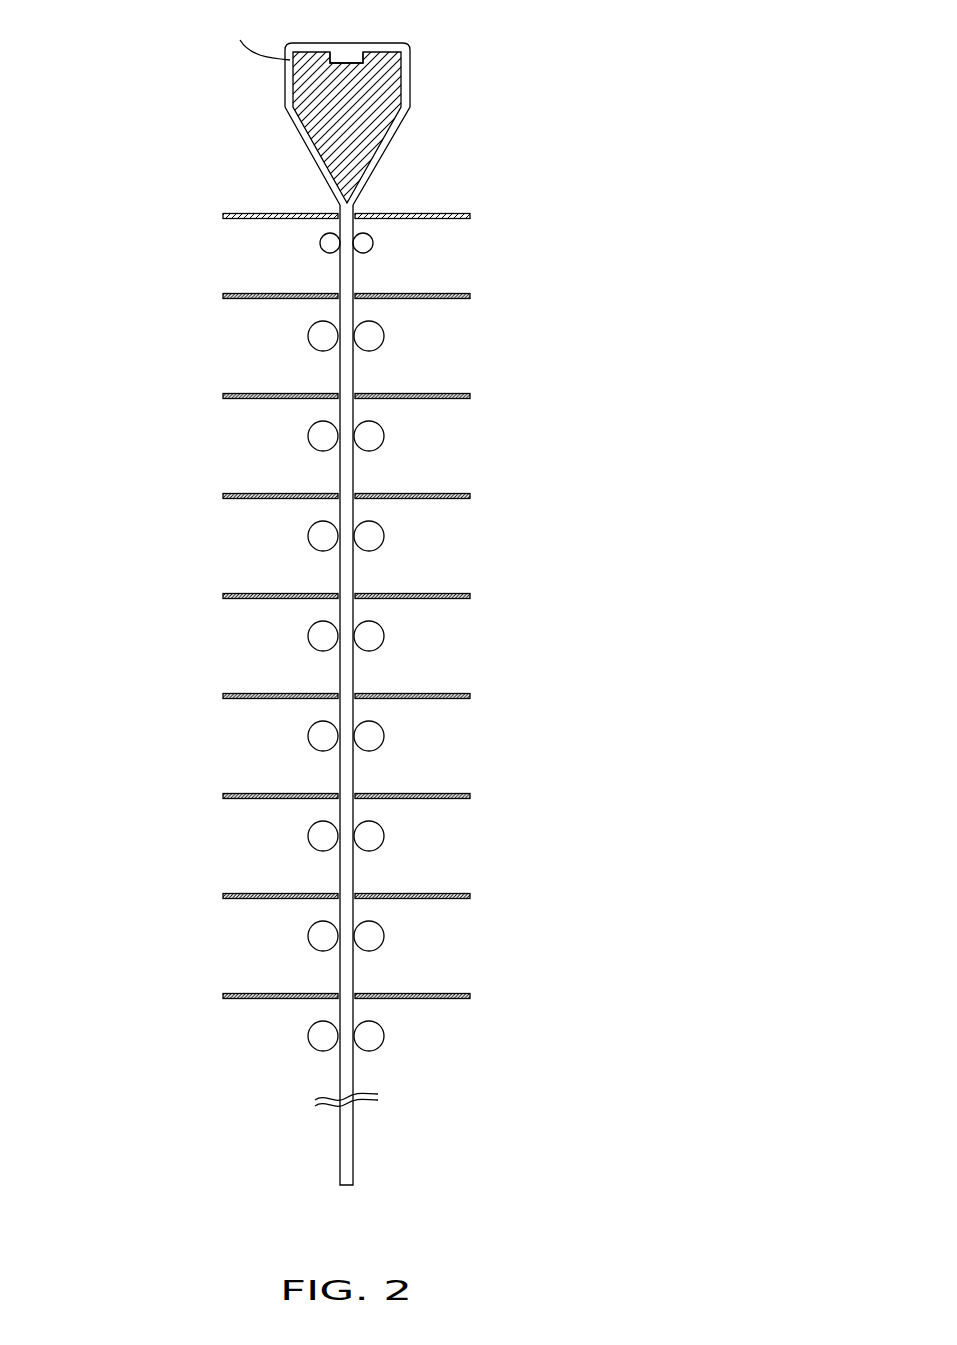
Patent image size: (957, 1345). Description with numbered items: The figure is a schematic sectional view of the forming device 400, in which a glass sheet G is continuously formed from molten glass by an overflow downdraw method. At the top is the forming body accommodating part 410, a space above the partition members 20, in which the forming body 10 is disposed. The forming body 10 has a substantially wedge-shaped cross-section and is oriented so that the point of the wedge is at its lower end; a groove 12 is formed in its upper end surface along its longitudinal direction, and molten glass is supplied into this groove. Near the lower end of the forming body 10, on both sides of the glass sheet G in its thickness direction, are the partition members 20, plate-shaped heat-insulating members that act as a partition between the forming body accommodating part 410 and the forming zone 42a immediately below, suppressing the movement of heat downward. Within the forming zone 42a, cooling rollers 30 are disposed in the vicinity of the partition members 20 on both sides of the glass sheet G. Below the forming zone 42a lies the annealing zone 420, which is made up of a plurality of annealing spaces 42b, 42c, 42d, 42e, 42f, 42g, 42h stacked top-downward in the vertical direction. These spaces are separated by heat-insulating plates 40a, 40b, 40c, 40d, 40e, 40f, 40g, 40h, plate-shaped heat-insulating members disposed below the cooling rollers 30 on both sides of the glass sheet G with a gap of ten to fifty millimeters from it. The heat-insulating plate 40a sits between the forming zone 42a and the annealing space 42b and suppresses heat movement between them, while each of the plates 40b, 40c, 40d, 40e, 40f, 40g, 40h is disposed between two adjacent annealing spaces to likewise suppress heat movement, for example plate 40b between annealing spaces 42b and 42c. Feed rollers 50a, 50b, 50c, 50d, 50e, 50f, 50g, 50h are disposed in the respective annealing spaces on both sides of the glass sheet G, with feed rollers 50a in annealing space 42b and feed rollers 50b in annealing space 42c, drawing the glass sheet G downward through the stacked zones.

The forming device 400 is at (577, 84).
The forming body accommodating part 410 is at (127, 107).
The annealing zone 420 is at (125, 341).
The forming body 10 is at (388, 90).
The groove 12 is at (354, 58).
The partition members 20 is at (220, 216).
The cooling rollers 30 is at (330, 244).
The heat-insulating plate 40a is at (220, 296).
The heat-insulating plate 40b is at (220, 396).
The heat-insulating plate 40c is at (220, 496).
The heat-insulating plate 40d is at (220, 596).
The heat-insulating plate 40e is at (220, 696).
The heat-insulating plate 40f is at (220, 796).
The heat-insulating plate 40g is at (220, 896).
The heat-insulating plate 40h is at (220, 996).
The forming zone 42a is at (256, 261).
The annealing space 42b is at (256, 349).
The annealing space 42c is at (256, 449).
The annealing space 42d is at (256, 549).
The annealing space 42e is at (256, 649).
The annealing space 42f is at (256, 749).
The annealing space 42g is at (256, 849).
The annealing space 42h is at (256, 949).
The feed rollers 50a is at (322, 333).
The feed rollers 50b is at (322, 433).
The feed rollers 50c is at (322, 533).
The feed rollers 50d is at (322, 633).
The feed rollers 50e is at (322, 733).
The feed rollers 50f is at (322, 833).
The feed rollers 50g is at (322, 933).
The feed rollers 50h is at (322, 1033).
The glass sheet G is at (347, 1070).